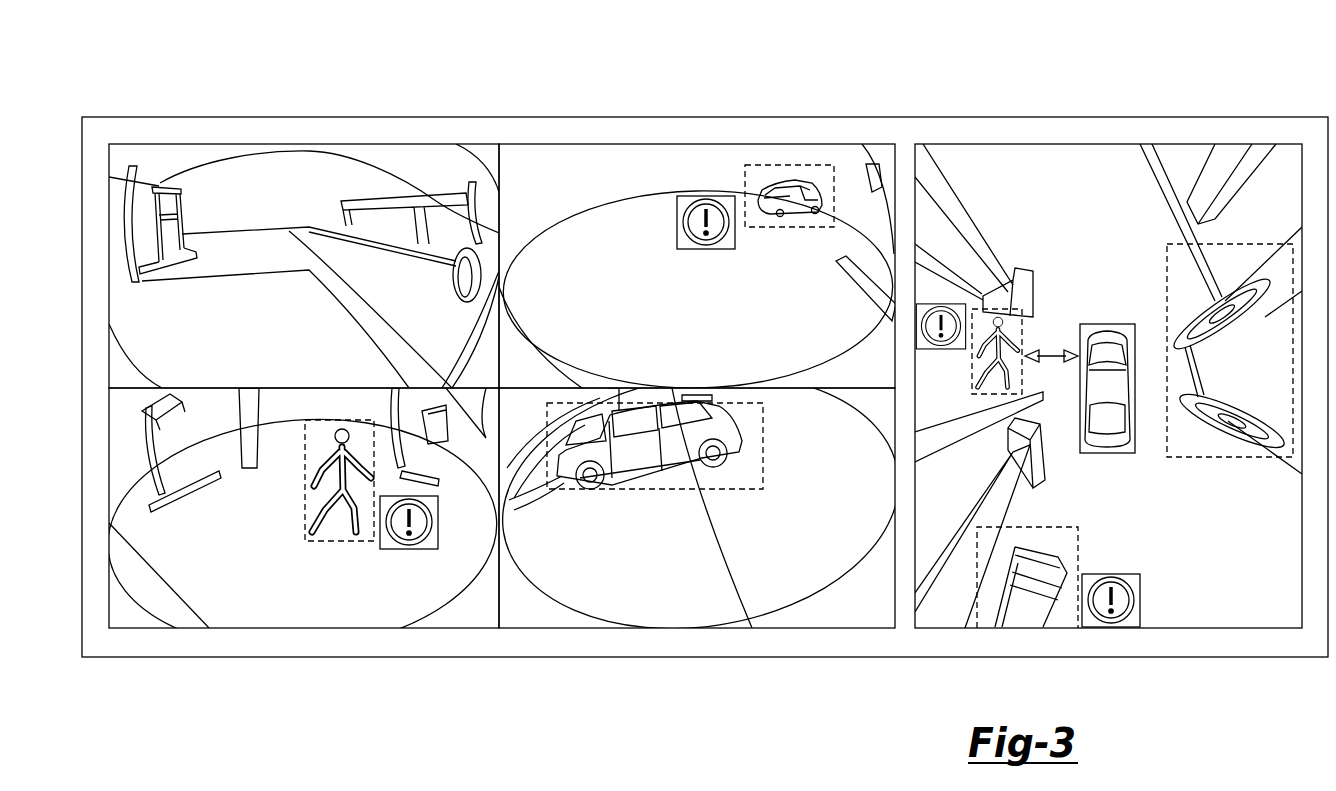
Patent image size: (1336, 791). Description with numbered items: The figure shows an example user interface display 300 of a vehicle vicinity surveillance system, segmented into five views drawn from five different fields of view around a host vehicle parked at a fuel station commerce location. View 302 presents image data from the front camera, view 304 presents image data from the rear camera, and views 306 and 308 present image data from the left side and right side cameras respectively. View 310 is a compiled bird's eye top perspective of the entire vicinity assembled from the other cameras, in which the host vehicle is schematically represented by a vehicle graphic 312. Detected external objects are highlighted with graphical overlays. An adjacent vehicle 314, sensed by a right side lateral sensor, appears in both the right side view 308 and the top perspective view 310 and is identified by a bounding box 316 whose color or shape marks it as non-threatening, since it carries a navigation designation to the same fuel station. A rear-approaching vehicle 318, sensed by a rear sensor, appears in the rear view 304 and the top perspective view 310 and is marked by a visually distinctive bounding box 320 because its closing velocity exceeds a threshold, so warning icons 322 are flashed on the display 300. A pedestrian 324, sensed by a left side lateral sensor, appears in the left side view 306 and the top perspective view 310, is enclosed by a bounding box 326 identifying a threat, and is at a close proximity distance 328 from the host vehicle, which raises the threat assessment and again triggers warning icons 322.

The user interface display 300 is at (193, 117).
The front camera view 302 is at (398, 162).
The rear camera view 304 is at (702, 162).
The left side camera view 306 is at (398, 610).
The right side camera view 308 is at (702, 610).
The top perspective view 310 is at (1093, 160).
The vehicle graphic 312 is at (1110, 323).
The adjacent vehicle 314 is at (640, 477).
The bounding box 316 is at (767, 453).
The rear-approaching vehicle 318 is at (802, 212).
The bounding box 320 is at (785, 228).
The warning icon 322 is at (675, 220).
The pedestrian 324 is at (347, 478).
The bounding box 326 is at (303, 483).
The close proximity distance 328 is at (1049, 354).